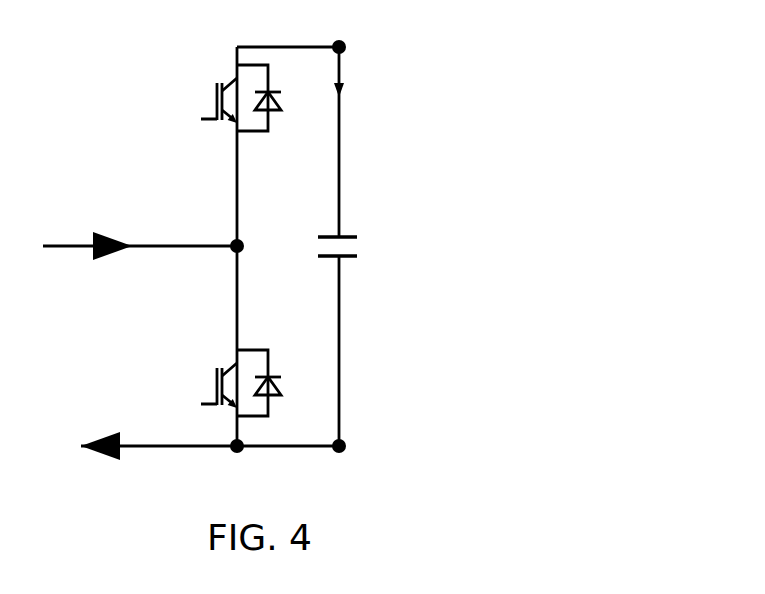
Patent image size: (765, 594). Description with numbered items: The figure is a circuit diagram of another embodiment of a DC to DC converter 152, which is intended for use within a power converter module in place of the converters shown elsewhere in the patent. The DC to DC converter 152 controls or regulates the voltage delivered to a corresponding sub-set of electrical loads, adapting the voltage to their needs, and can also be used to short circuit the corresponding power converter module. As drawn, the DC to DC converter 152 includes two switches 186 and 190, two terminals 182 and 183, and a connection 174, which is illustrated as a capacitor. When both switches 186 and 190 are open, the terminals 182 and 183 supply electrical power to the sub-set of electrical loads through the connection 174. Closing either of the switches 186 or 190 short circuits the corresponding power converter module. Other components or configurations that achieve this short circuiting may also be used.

The DC to DC converter 152 is at (453, 94).
The connection 174 is at (350, 257).
The terminal 182 is at (243, 240).
The terminal 183 is at (233, 448).
The switch 186 is at (178, 75).
The switch 190 is at (178, 376).